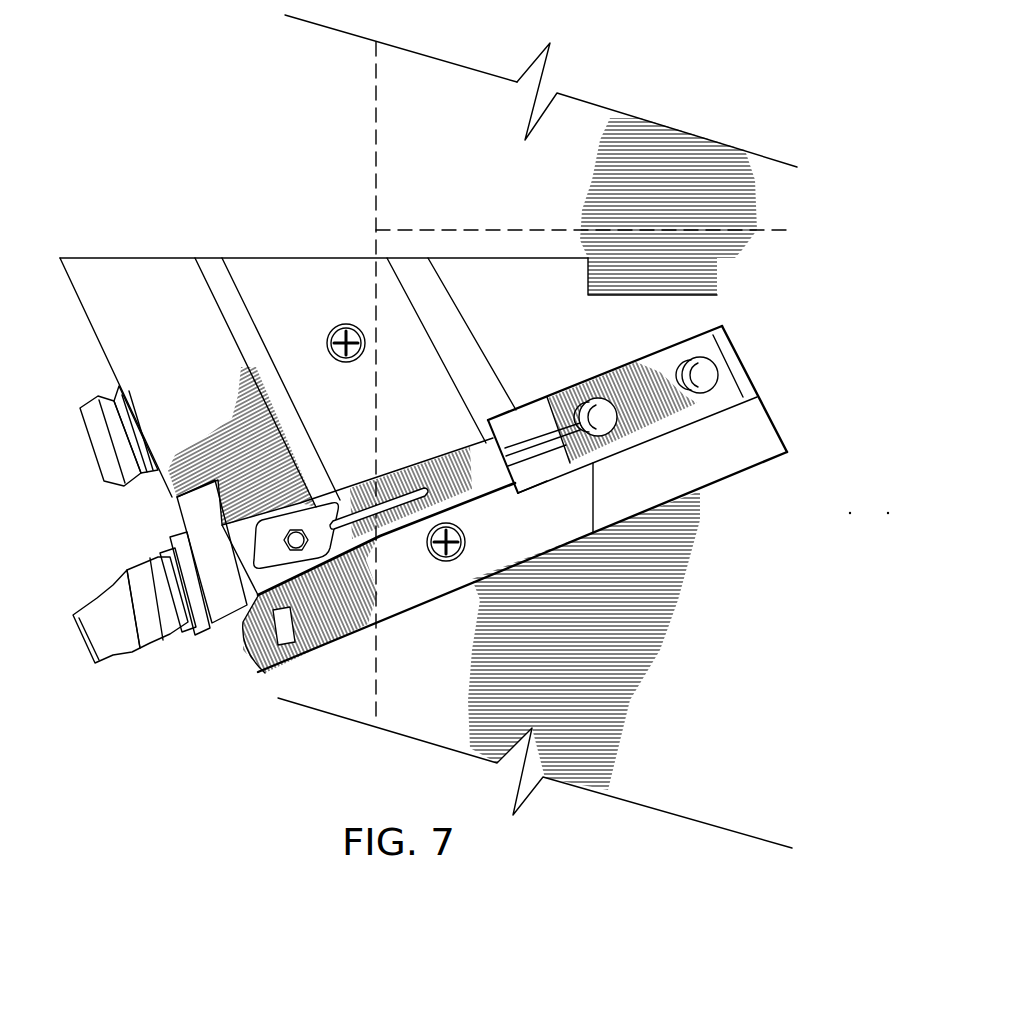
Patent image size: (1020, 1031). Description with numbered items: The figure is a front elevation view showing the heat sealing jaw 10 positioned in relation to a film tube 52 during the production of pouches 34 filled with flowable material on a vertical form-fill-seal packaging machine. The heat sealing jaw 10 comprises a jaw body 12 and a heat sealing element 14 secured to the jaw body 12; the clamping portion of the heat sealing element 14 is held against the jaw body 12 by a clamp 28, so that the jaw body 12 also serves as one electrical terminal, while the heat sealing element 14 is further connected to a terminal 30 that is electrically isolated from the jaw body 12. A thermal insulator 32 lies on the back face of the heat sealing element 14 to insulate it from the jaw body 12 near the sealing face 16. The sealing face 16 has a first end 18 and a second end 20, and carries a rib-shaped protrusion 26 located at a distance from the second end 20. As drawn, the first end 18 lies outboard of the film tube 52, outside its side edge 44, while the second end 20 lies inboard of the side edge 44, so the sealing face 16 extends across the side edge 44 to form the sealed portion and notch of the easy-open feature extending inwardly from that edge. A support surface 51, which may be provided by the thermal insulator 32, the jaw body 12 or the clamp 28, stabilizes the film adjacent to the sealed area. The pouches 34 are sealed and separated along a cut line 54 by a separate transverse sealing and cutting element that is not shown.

The heat sealing jaw 10 is at (122, 172).
The jaw body 12 is at (522, 459).
The heat sealing element 14 is at (410, 549).
The sealing face 16 is at (425, 518).
The first end 18 is at (327, 540).
The second end 20 is at (488, 468).
The rib-shaped protrusion 26 is at (360, 515).
The clamp 28 is at (653, 378).
The terminal 30 is at (263, 588).
The thermal insulator 32 is at (295, 275).
The pouch 34 is at (491, 151).
The side edge 44 is at (376, 97).
The support surface 51 is at (528, 462).
The film tube 52 is at (336, 70).
The cut line 54 is at (428, 230).